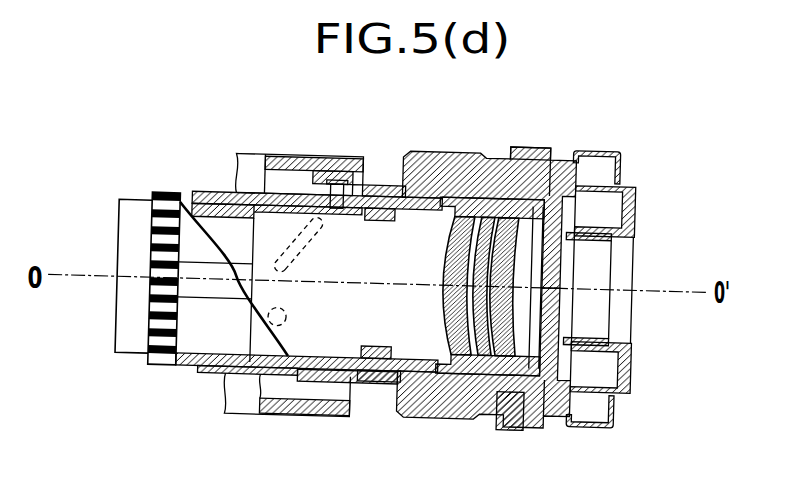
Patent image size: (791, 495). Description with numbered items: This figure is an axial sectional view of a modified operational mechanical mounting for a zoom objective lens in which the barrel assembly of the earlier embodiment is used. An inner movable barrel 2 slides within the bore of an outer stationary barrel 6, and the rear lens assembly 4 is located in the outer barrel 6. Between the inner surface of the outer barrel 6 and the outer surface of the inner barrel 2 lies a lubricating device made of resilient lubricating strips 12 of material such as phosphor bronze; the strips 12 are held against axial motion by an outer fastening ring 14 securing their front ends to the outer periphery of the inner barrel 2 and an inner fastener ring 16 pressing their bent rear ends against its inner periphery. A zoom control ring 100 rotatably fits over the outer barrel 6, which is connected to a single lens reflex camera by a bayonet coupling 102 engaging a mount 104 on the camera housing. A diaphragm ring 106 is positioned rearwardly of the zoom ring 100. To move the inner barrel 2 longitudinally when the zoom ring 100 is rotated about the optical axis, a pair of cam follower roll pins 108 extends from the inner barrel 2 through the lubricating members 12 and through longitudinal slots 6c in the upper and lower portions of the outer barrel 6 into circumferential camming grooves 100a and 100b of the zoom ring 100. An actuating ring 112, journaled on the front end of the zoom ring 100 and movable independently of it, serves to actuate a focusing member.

The inner barrel 2 is at (350, 208).
The rear lens assembly 4 is at (498, 413).
The outer barrel 6 is at (462, 153).
The longitudinal slots 6c is at (302, 197).
The lubricating strips 12 is at (240, 203).
The outer fastening ring 14 is at (377, 197).
The inner fastener ring 16 is at (383, 220).
The zoom control ring 100 is at (435, 131).
The circumferential camming groove 100a is at (300, 247).
The circumferential camming groove 100b is at (287, 313).
The bayonet coupling 102 is at (618, 162).
The mount 104 is at (633, 188).
The diaphragm ring 106 is at (528, 157).
The cam follower roll pins 108 is at (337, 197).
The actuating ring 112 is at (298, 405).